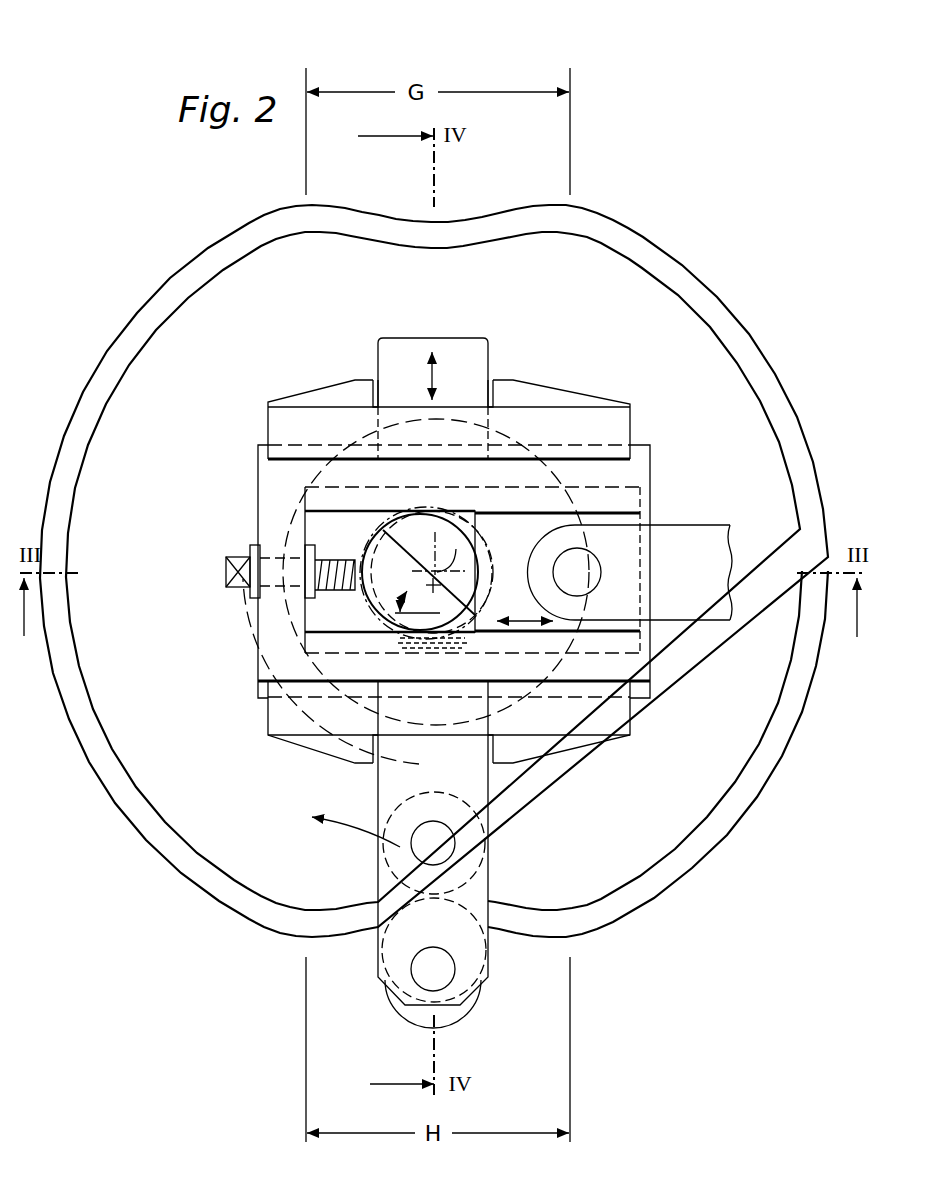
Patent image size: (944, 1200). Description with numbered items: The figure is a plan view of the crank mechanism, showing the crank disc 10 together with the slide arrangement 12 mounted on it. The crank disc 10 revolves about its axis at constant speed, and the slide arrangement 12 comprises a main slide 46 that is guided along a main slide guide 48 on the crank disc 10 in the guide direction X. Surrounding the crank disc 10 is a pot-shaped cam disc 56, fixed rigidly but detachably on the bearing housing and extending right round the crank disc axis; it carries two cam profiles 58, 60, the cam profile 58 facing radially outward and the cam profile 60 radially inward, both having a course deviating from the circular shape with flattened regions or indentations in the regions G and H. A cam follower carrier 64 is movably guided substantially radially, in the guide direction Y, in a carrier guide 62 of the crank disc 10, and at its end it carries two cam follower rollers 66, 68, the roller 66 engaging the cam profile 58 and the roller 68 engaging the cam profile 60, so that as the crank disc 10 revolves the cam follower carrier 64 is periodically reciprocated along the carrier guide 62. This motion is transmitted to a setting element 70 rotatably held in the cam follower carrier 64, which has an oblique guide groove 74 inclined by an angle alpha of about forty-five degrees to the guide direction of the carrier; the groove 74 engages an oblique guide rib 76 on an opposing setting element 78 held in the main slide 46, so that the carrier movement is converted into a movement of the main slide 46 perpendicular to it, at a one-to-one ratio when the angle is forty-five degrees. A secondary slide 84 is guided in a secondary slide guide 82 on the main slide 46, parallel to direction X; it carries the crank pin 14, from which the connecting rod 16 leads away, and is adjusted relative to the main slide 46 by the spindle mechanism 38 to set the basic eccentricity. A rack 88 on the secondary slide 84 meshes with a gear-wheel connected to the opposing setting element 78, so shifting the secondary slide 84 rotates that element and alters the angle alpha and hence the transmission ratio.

The crank disc 10 is at (512, 714).
The slide arrangement 12 is at (664, 477).
The crank pin 14 is at (592, 572).
The connecting rod 16 is at (647, 594).
The spindle mechanism 38 is at (236, 580).
The main slide 46 is at (272, 488).
The main slide guide 48 is at (612, 428).
The pot-shaped cam disc 56 is at (434, 571).
The cam profile 58 is at (778, 762).
The cam profile 60 is at (702, 826).
The carrier guide 62 is at (494, 398).
The cam follower carrier 64 is at (436, 854).
The cam follower roller 66 is at (467, 1016).
The cam follower roller 68 is at (470, 862).
The setting element 70 is at (516, 591).
The oblique guide groove 74 is at (422, 518).
The oblique guide rib 76 is at (362, 532).
The opposing setting element 78 is at (300, 620).
The secondary slide guide 82 is at (612, 660).
The secondary slide 84 is at (633, 522).
The rack 88 is at (331, 671).